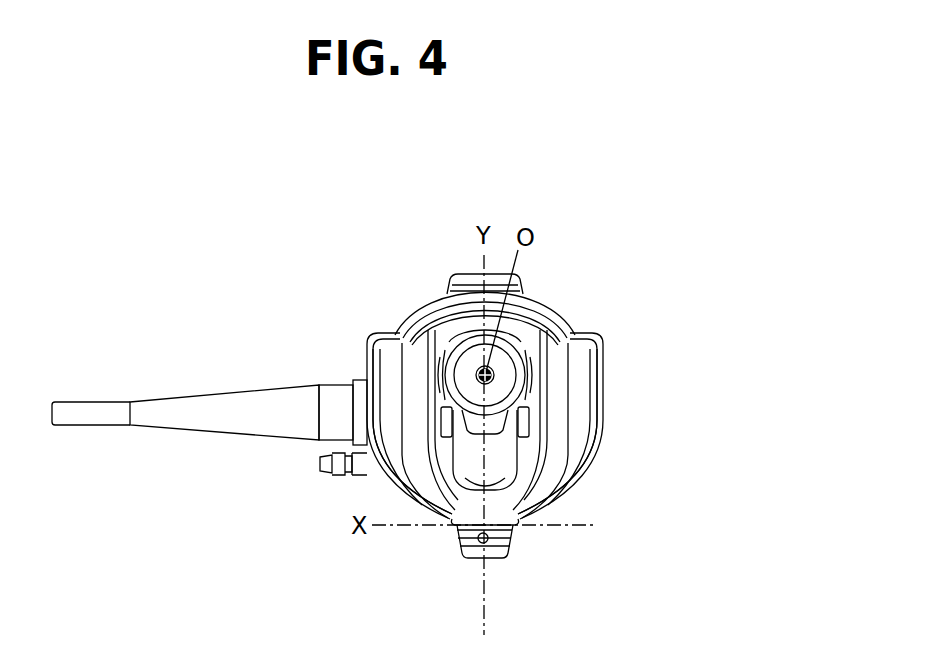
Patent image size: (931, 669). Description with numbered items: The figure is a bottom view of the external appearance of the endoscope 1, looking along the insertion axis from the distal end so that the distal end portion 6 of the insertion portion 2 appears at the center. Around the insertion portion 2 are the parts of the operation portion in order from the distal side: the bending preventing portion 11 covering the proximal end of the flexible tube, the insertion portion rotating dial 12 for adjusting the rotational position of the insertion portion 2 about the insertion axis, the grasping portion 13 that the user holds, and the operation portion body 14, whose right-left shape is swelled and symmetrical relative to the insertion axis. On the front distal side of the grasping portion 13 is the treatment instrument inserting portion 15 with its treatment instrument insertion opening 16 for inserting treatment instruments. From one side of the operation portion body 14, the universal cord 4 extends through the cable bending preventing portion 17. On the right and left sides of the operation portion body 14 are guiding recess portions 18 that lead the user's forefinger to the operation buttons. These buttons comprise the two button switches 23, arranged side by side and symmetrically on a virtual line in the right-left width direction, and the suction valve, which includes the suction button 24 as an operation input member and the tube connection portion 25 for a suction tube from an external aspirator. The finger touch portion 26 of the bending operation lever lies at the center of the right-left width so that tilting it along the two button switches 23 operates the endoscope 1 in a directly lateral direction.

The endoscope 1 is at (462, 218).
The insertion portion 2 is at (492, 380).
The universal cord 4 is at (87, 400).
The distal end portion 6 is at (475, 372).
The bending preventing portion 11 is at (503, 363).
The insertion portion rotating dial 12 is at (457, 337).
The grasping portion 13 is at (540, 380).
The operation portion body 14 is at (580, 430).
The treatment instrument inserting portion 15 is at (455, 518).
The treatment instrument insertion opening 16 is at (520, 508).
The cable bending preventing portion 17 is at (212, 390).
The guiding recess portions 18 is at (393, 360).
The button switches 23 is at (457, 527).
The suction button 24 is at (468, 560).
The tube connection portion 25 is at (318, 464).
The finger touch portion 26 is at (455, 277).